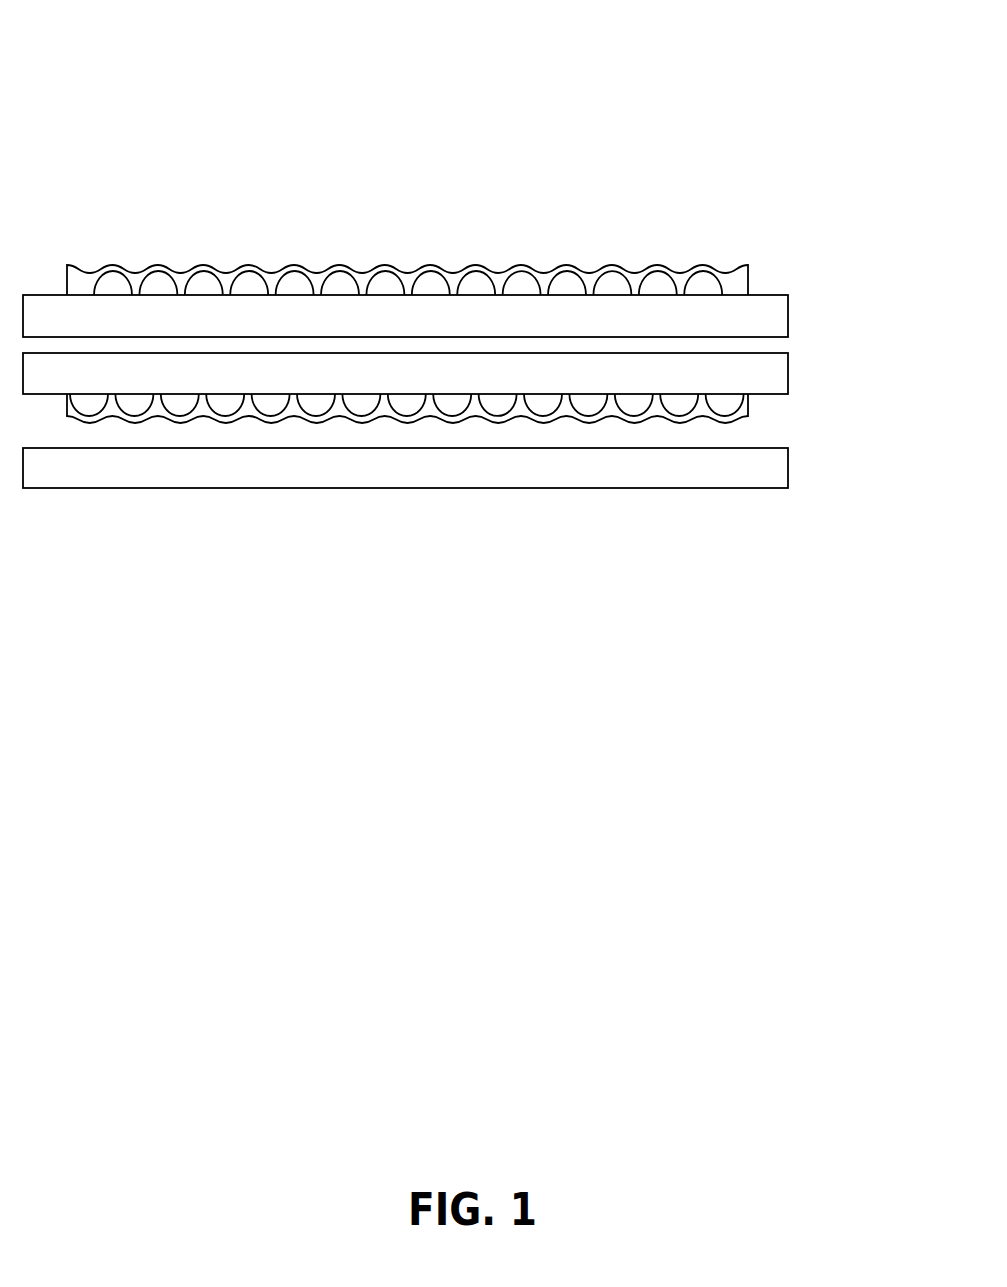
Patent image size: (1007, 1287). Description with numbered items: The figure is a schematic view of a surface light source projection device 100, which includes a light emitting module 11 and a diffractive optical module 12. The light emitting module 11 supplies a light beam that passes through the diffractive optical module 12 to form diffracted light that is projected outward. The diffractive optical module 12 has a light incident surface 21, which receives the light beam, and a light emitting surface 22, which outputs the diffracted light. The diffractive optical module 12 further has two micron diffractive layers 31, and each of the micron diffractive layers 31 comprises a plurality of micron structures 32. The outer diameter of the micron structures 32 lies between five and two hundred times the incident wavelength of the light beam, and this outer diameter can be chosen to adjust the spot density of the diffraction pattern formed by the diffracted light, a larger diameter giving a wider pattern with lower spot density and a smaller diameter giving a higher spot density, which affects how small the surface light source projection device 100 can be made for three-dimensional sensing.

The surface light source projection device 100 is at (120, 37).
The light emitting module 11 is at (768, 488).
The diffractive optical module 12 is at (823, 303).
The light incident surface 21 is at (768, 394).
The light emitting surface 22 is at (770, 295).
The micron diffractive layer 31 is at (610, 268).
The micron structures 32 is at (660, 270).